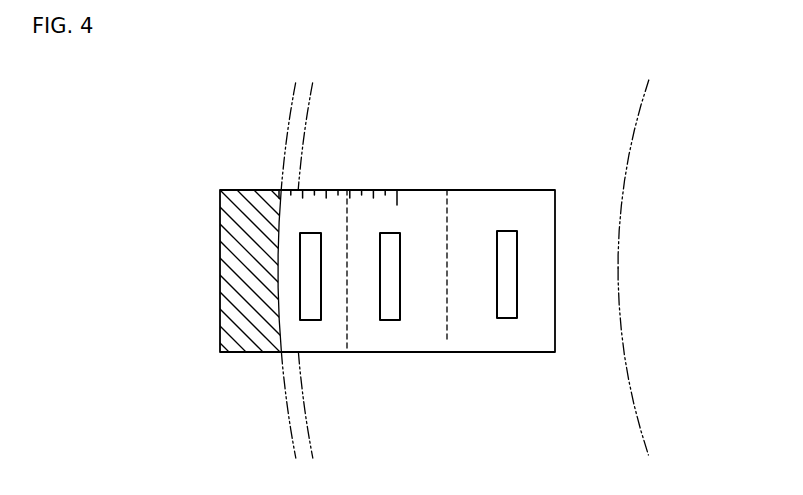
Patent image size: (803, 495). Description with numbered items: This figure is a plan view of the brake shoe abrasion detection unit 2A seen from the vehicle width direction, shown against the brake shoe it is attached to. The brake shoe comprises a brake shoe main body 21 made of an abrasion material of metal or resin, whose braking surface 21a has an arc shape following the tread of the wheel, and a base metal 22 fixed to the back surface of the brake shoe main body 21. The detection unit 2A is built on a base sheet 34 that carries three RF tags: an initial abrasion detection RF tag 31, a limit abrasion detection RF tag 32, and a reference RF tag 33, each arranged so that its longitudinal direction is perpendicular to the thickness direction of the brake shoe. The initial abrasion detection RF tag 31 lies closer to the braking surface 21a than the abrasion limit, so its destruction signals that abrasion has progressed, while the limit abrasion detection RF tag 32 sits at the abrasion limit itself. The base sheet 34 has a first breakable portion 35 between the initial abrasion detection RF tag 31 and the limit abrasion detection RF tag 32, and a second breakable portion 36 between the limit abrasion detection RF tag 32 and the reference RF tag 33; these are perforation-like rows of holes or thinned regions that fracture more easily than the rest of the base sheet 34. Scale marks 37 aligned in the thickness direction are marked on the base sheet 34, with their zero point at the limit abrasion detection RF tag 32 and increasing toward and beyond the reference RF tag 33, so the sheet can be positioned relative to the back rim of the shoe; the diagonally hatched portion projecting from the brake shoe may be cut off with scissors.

The brake shoe abrasion detection unit 2A is at (388, 216).
The brake shoe main body 21 is at (607, 337).
The braking surface 21a is at (631, 146).
The base metal 22 is at (289, 122).
The initial abrasion detection RF tag 31 is at (505, 318).
The limit abrasion detection RF tag 32 is at (389, 320).
The reference RF tag 33 is at (311, 320).
The base sheet 34 is at (543, 252).
The first breakable portion 35 is at (447, 208).
The second breakable portion 36 is at (347, 228).
The scale marks 37 is at (380, 190).